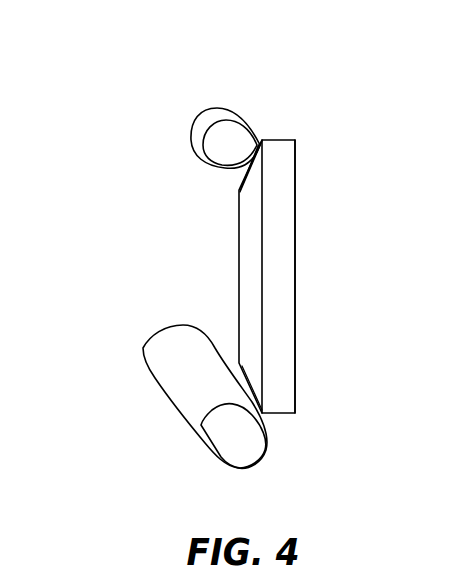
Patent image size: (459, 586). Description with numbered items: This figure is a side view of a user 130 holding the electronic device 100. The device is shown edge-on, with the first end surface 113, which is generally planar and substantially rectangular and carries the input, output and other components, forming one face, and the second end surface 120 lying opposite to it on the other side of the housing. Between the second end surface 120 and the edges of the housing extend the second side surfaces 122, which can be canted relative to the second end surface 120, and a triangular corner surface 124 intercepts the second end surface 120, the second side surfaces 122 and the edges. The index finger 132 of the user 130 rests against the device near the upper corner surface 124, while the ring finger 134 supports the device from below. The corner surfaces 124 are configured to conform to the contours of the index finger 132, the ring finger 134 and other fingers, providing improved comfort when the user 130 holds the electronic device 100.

The electronic device 100 is at (281, 235).
The first end surface 113 is at (295, 360).
The second end surface 120 is at (238, 270).
The second side surfaces 122 is at (253, 238).
The corner surface 124 is at (247, 175).
The user 130 is at (155, 249).
The index finger 132 is at (212, 107).
The ring finger 134 is at (140, 358).